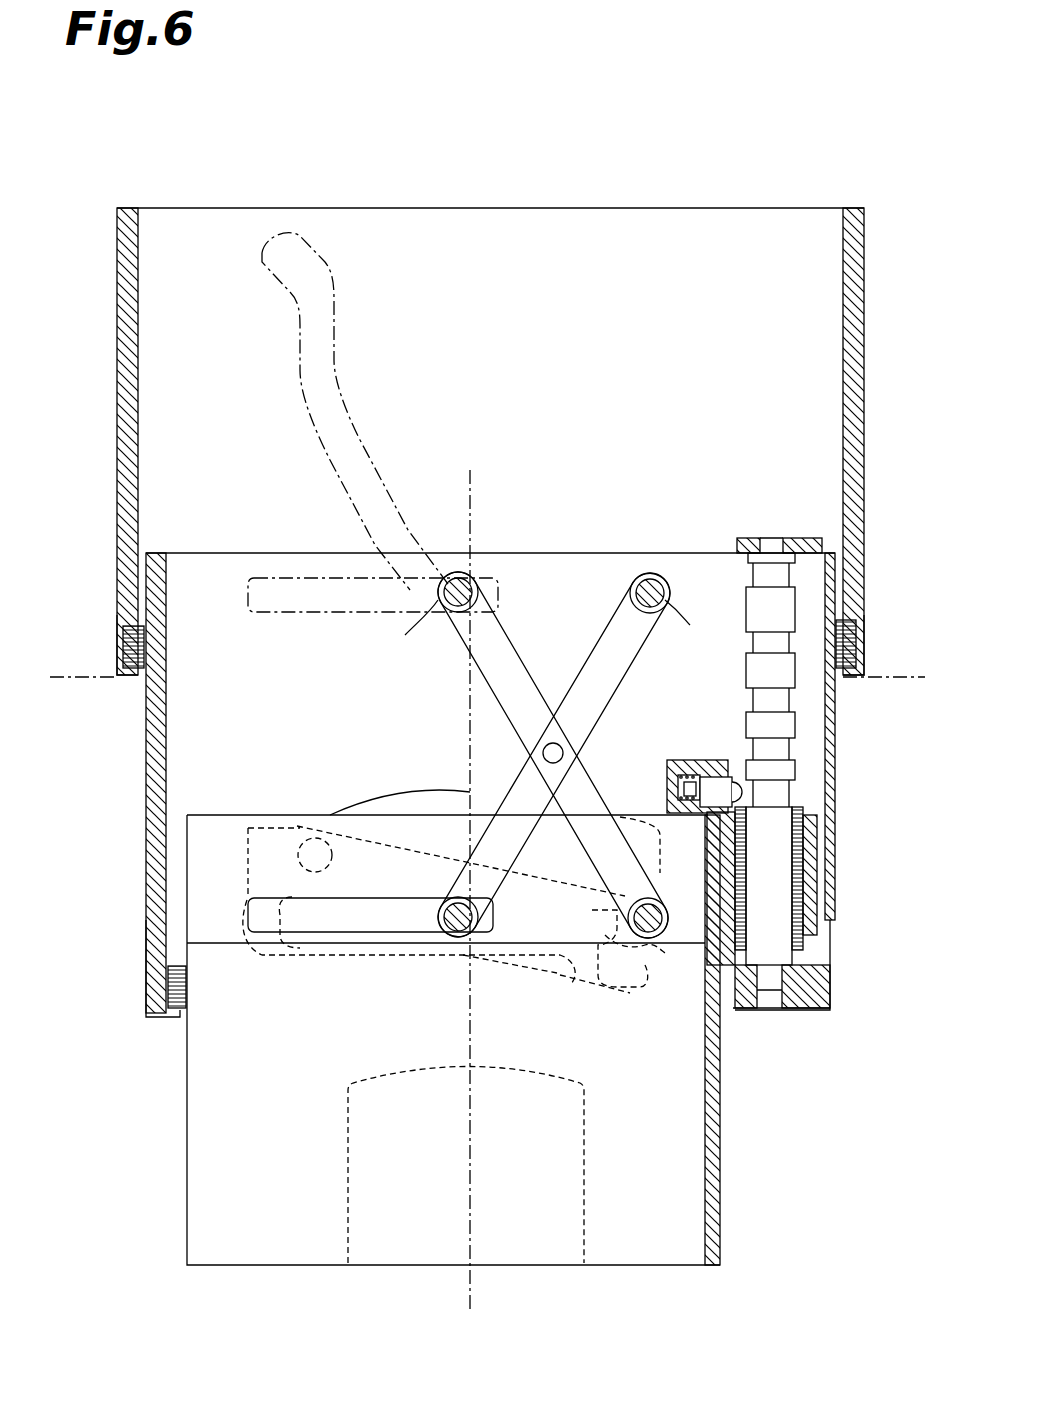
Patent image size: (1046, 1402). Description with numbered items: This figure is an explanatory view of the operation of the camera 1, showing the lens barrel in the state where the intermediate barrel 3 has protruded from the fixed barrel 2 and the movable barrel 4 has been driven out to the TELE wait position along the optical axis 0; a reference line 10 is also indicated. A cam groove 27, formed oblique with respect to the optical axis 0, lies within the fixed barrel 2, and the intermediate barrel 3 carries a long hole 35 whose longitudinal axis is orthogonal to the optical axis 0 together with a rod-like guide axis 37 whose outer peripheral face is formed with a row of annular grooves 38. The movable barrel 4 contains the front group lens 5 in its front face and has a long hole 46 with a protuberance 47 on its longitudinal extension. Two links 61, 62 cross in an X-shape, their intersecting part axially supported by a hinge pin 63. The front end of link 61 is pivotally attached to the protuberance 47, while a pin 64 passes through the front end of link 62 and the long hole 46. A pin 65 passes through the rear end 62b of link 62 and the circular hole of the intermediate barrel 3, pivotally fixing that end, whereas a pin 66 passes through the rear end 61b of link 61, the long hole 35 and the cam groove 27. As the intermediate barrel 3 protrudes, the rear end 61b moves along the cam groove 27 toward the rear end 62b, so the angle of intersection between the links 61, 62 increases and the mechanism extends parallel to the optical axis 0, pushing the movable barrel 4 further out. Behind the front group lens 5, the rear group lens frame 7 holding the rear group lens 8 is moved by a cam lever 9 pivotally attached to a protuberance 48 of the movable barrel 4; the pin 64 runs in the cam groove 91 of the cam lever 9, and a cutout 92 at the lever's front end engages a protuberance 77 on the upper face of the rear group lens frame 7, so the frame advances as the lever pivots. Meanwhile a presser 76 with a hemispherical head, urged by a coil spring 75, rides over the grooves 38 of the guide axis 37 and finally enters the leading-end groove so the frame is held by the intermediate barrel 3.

The optical axis 0 is at (470, 1297).
The camera 1 is at (112, 188).
The fixed barrel 2 is at (117, 395).
The intermediate barrel 3 is at (146, 775).
The movable barrel 4 is at (187, 1100).
The front group lens 5 is at (584, 1145).
The rear group lens frame 7 is at (248, 858).
The rear group lens 8 is at (460, 792).
The cam lever 9 is at (535, 975).
The reference plane 10 is at (878, 680).
The cam groove 27 is at (330, 368).
The long hole 35 is at (285, 597).
The guide axis 37 is at (780, 885).
The grooves 38 is at (793, 628).
The long hole 46 is at (265, 920).
The protuberance 47 is at (655, 905).
The protuberance 48 is at (312, 838).
The link 61 is at (505, 605).
The rear end of link 61 61b is at (462, 572).
The link 62 is at (602, 605).
The rear end of link 62 62b is at (650, 573).
The hinge pin 63 is at (563, 752).
The pin 64 is at (455, 938).
The pin 65 is at (696, 621).
The pin 66 is at (405, 635).
The coil spring 75 is at (688, 763).
The presser 76 is at (730, 777).
The protuberance 77 is at (648, 942).
The cam groove 91 is at (305, 925).
The cutout 92 is at (645, 978).